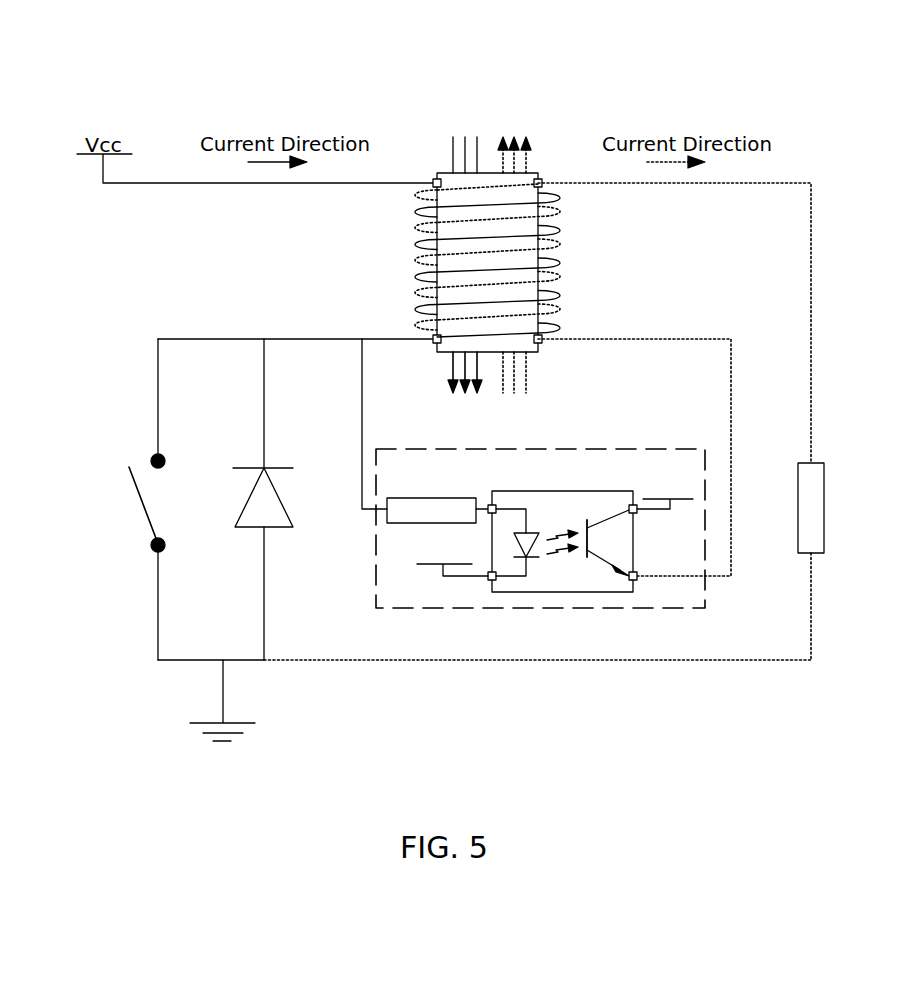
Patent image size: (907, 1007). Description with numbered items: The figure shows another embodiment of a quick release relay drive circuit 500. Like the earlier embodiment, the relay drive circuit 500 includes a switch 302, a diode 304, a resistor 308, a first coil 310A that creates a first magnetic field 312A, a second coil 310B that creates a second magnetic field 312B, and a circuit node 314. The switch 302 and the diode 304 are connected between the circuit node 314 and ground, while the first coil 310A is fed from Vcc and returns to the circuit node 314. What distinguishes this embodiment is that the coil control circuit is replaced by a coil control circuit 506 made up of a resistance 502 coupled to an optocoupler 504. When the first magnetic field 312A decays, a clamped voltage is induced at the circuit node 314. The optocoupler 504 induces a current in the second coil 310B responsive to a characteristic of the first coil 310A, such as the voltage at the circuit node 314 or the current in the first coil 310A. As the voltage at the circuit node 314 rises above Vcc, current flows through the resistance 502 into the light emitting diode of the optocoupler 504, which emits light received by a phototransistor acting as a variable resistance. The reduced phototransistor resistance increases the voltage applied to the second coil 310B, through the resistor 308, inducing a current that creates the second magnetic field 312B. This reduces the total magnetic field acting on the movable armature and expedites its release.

The quick release relay drive circuit 500 is at (810, 75).
The switch 302 is at (152, 545).
The diode 304 is at (287, 510).
The resistor 308 is at (825, 478).
The first coil 310A is at (414, 278).
The second coil 310B is at (560, 246).
The first magnetic field 312A is at (452, 140).
The second magnetic field 312B is at (525, 138).
The circuit node 314 is at (208, 339).
The resistance 502 is at (462, 498).
The optocoupler 504 is at (572, 491).
The coil control circuit 506 is at (625, 449).